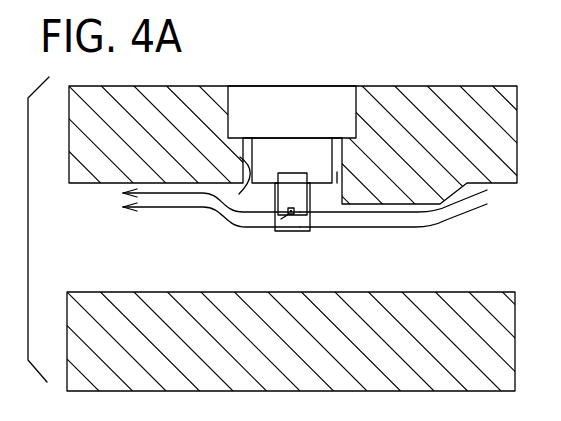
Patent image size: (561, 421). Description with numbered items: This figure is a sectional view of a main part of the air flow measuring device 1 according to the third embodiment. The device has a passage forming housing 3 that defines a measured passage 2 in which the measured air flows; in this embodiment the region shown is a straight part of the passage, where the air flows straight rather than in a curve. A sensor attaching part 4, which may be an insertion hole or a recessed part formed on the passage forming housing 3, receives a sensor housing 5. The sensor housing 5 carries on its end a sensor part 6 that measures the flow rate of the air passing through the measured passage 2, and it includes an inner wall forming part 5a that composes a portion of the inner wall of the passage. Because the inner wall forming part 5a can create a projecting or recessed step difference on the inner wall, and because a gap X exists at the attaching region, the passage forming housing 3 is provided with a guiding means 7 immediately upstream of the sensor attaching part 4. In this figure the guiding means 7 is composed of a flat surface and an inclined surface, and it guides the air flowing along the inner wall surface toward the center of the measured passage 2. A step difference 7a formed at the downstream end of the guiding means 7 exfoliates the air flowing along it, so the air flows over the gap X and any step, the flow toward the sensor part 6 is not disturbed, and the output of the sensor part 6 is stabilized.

The air flow measuring device 1 is at (459, 79).
The measured passage 2 is at (456, 271).
The passage forming housing 3 is at (392, 96).
The sensor attaching part 4 is at (236, 187).
The sensor housing 5 is at (332, 96).
The inner wall forming part 5a is at (263, 188).
The sensor part 6 is at (278, 218).
The guiding means 7 is at (390, 208).
The step difference 7a is at (338, 194).
The gap X is at (336, 180).